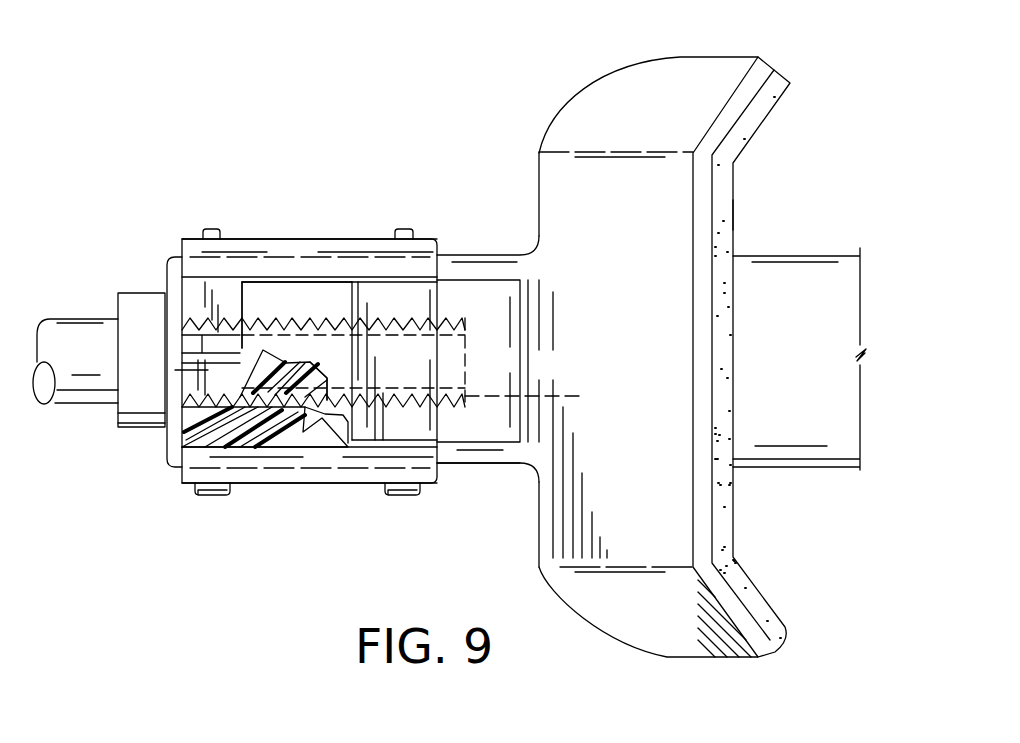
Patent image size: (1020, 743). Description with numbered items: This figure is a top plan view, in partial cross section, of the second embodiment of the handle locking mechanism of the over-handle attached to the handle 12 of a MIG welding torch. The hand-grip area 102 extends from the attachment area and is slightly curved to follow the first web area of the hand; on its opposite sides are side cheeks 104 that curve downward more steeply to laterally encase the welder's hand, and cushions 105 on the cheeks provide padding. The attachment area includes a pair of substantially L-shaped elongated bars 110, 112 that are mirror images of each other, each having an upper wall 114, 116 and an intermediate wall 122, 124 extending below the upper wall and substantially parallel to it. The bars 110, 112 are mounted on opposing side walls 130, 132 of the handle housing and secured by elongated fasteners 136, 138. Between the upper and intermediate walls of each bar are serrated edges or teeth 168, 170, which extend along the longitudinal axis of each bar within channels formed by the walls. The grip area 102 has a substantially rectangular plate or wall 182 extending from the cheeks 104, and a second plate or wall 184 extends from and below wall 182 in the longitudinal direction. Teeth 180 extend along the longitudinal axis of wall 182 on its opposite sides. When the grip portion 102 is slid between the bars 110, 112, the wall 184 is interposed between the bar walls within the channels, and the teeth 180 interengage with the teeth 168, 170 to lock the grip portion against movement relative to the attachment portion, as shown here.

The handle 12 is at (818, 257).
The hand-grip area 102 is at (473, 297).
The side cheeks 104 is at (632, 87).
The cushions 105 is at (760, 118).
The L-shaped elongated bar 110 is at (258, 238).
The L-shaped elongated bar 112 is at (269, 486).
The upper wall 114 is at (196, 307).
The upper wall 116 is at (318, 412).
The intermediate wall 122 is at (200, 345).
The intermediate wall 124 is at (190, 376).
The side wall 130 is at (456, 253).
The side wall 132 is at (468, 470).
The elongated fastener 136 is at (208, 497).
The elongated fastener 138 is at (405, 497).
The serrated edges or teeth 168 is at (182, 347).
The serrated edges or teeth 170 is at (205, 394).
The teeth 180 is at (317, 300).
The plate or wall 182 is at (382, 292).
The second plate or wall 184 is at (545, 393).